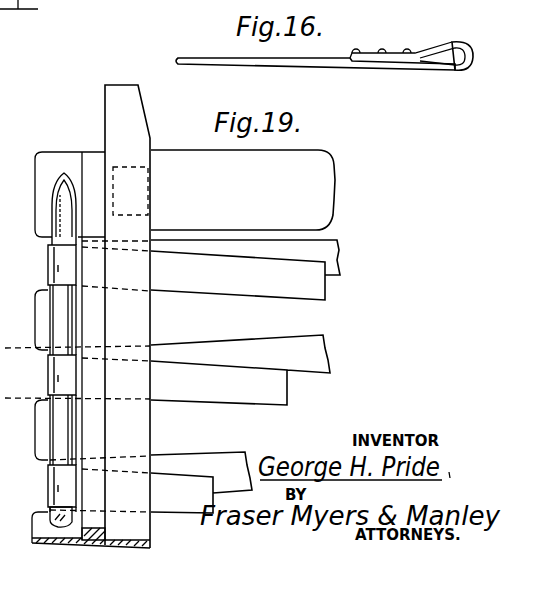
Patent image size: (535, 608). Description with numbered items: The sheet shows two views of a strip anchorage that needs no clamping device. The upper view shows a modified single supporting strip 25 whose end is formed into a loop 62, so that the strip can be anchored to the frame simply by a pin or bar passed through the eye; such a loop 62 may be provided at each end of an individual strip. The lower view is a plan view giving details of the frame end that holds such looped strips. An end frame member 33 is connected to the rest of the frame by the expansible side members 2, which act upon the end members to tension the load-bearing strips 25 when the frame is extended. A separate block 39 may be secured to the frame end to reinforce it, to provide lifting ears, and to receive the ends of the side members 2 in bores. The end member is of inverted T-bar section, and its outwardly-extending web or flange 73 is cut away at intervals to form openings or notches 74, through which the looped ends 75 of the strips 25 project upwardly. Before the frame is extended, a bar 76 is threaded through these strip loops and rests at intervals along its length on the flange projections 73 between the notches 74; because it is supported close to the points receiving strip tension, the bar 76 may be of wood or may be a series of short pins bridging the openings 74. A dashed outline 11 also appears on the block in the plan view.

In FIG. 19, the extensible side member 2 is at (243, 190).
In FIG. 19, the slot 11 is at (137, 164).
In FIG. 16, the supporting strip 25 is at (214, 58).
In FIG. 19, the supporting strip 25 is at (311, 335).
In FIG. 19, the end frame member 33 is at (88, 162).
In FIG. 19, the block 39 is at (113, 113).
In FIG. 16, the loop 62 is at (447, 53).
In FIG. 19, the web or flange 73 is at (38, 343).
In FIG. 19, the opening or notch 74 is at (33, 243).
In FIG. 19, the looped end 75 is at (48, 383).
In FIG. 19, the bar 76 is at (60, 320).